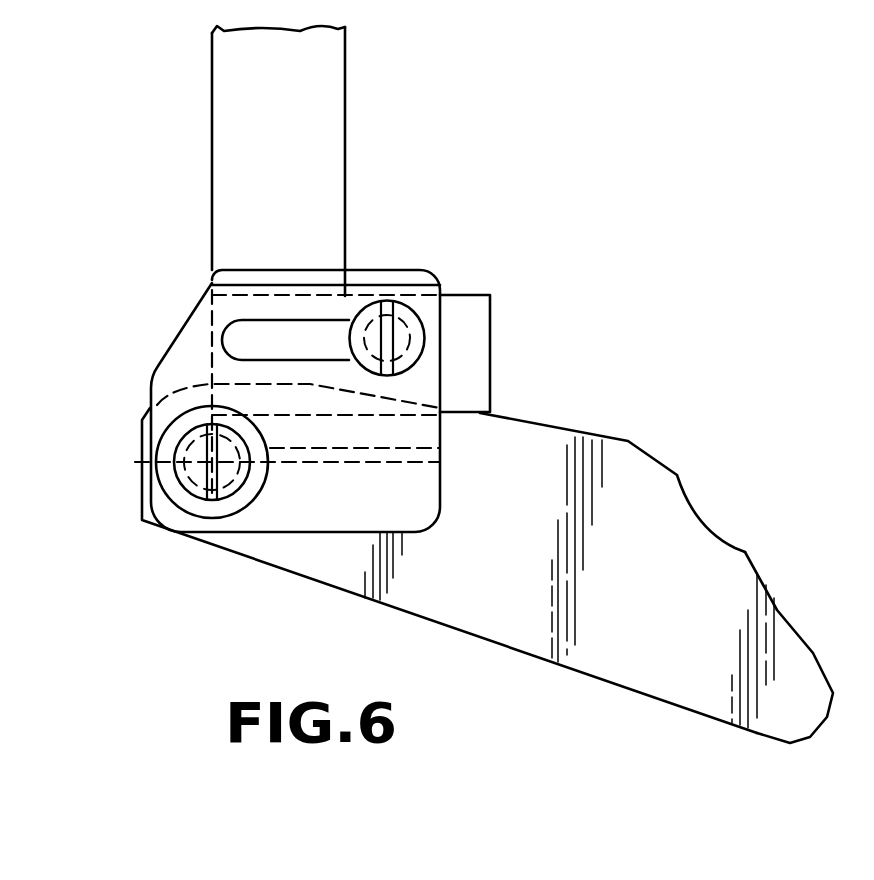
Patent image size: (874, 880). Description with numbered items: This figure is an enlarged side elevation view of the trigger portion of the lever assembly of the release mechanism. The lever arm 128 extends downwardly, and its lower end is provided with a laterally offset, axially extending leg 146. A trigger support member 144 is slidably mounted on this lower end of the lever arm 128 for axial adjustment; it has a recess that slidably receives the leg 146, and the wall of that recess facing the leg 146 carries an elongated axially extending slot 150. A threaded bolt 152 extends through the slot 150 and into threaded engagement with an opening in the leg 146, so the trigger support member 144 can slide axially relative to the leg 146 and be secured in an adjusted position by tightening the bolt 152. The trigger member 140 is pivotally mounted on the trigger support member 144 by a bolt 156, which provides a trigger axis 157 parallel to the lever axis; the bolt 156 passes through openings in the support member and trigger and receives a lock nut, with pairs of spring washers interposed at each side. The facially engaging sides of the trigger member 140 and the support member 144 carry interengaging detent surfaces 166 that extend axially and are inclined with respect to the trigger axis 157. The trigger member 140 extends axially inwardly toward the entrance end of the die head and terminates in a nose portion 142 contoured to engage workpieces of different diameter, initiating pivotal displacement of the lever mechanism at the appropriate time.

The lever arm 128 is at (322, 158).
The trigger member 140 is at (512, 615).
The nose portion 142 is at (778, 640).
The trigger support member 144 is at (183, 357).
The leg 146 is at (470, 340).
The slot 150 is at (270, 328).
The threaded bolt 152 is at (400, 305).
The bolt 156 is at (192, 485).
The trigger axis 157 is at (220, 463).
The detent surfaces 166 is at (147, 462).